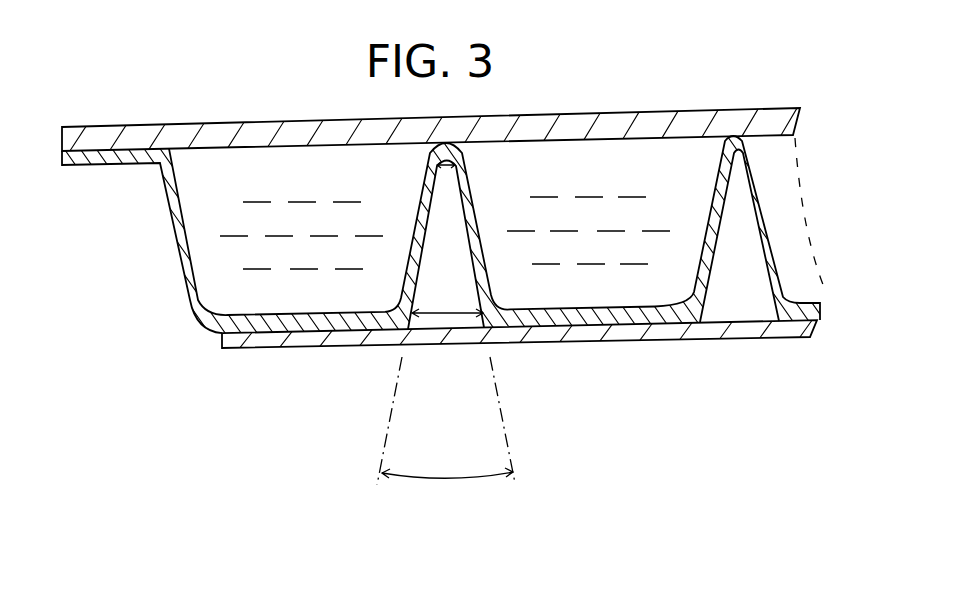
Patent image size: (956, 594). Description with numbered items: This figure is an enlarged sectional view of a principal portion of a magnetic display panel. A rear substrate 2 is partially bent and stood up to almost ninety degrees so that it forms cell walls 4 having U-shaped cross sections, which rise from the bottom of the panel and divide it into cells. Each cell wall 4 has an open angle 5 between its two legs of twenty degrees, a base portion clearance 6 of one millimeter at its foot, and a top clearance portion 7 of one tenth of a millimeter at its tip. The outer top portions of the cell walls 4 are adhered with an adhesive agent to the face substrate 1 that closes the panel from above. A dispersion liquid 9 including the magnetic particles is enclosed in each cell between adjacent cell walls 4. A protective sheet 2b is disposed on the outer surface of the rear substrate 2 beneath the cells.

The face substrate 1 is at (529, 128).
The rear substrate 2 is at (225, 323).
The protective sheet 2b is at (375, 345).
The cell wall 4 is at (777, 228).
The open angle 5 is at (448, 481).
The base portion clearance 6 is at (446, 314).
The top clearance portion 7 is at (440, 162).
The dispersion liquid 9 is at (228, 219).